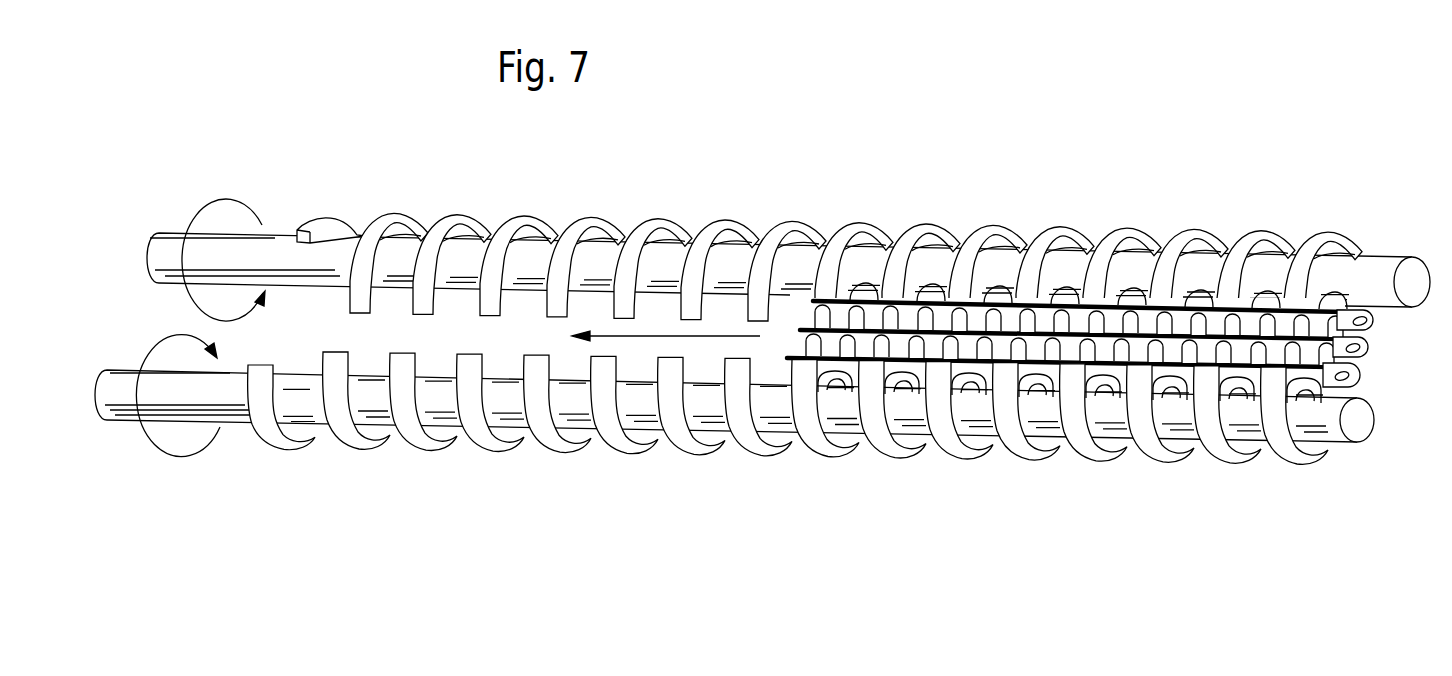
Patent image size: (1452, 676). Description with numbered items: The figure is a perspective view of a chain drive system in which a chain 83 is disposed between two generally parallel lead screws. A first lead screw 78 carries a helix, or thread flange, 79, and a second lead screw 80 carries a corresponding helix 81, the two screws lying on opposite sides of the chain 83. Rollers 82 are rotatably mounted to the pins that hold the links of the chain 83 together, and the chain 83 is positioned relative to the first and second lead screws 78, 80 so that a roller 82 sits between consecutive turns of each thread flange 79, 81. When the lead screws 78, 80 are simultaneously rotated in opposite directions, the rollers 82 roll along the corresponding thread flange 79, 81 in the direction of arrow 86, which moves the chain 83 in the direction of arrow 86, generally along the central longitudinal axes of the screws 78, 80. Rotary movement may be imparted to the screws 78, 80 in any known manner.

The first lead screw 78 is at (734, 437).
The helix 79 is at (508, 450).
The second lead screw 80 is at (788, 231).
The helix 81 is at (663, 220).
The rollers 82 is at (935, 297).
The chain 83 is at (1372, 350).
The arrow 86 is at (695, 340).